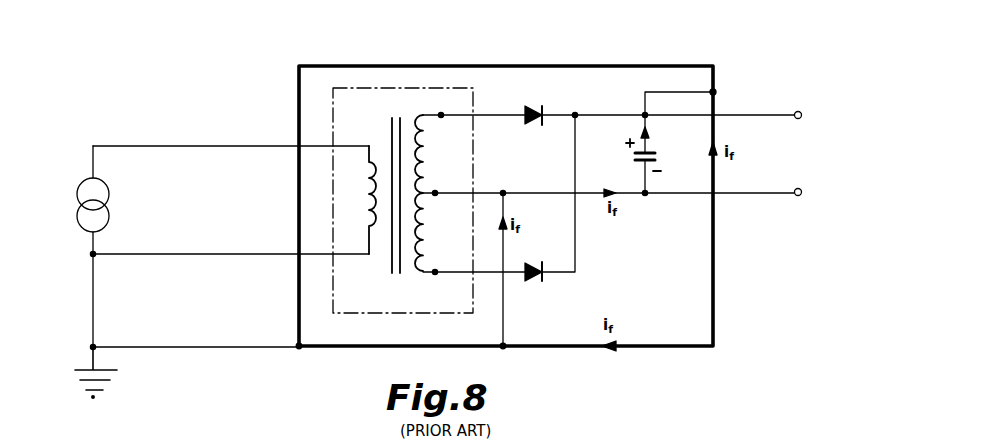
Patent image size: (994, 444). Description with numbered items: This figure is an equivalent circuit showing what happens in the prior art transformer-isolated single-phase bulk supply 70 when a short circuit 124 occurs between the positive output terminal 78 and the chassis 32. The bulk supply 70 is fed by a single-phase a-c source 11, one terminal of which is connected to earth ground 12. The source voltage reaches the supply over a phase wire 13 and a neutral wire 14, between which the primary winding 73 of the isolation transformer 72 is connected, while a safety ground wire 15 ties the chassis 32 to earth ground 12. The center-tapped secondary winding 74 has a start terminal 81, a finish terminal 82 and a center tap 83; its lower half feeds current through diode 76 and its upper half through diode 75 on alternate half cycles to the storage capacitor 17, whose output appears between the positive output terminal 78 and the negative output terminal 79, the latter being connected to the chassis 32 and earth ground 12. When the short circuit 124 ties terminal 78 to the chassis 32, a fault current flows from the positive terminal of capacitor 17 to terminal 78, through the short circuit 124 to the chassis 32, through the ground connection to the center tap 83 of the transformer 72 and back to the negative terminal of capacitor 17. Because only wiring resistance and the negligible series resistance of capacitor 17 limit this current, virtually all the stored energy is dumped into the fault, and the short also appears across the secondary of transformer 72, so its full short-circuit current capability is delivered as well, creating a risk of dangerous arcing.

The single-phase bulk supply 70 is at (706, 45).
The chassis 32 is at (601, 66).
The single-phase a-c source 11 is at (80, 190).
The earth ground 12 is at (80, 370).
The phase wire 13 is at (204, 126).
The neutral wire 14 is at (206, 228).
The safety ground wire 15 is at (196, 323).
The isolation transformer 72 is at (371, 301).
The primary winding 73 is at (372, 145).
The center-tapped secondary winding 74 is at (423, 116).
The diode 75 is at (543, 106).
The diode 76 is at (545, 282).
The start terminal 81 is at (435, 273).
The finish terminal 82 is at (443, 98).
The center tap 83 is at (435, 195).
The short circuit 124 is at (645, 92).
The storage capacitor 17 is at (636, 164).
The positive output terminal 78 is at (802, 113).
The negative output terminal 79 is at (802, 190).